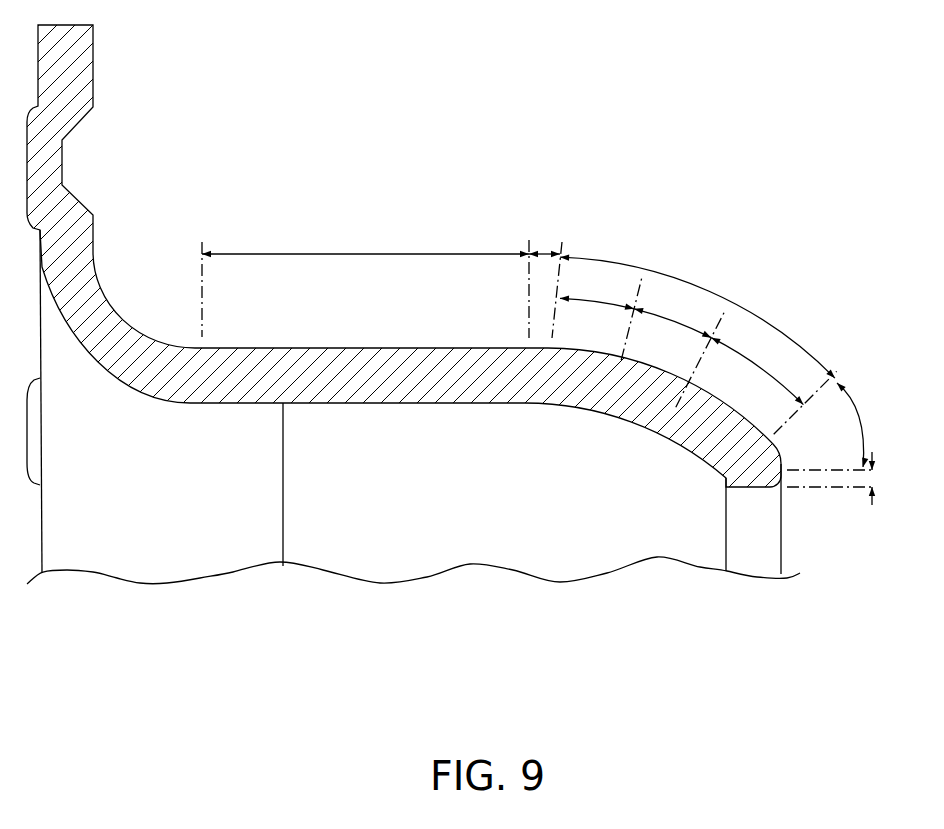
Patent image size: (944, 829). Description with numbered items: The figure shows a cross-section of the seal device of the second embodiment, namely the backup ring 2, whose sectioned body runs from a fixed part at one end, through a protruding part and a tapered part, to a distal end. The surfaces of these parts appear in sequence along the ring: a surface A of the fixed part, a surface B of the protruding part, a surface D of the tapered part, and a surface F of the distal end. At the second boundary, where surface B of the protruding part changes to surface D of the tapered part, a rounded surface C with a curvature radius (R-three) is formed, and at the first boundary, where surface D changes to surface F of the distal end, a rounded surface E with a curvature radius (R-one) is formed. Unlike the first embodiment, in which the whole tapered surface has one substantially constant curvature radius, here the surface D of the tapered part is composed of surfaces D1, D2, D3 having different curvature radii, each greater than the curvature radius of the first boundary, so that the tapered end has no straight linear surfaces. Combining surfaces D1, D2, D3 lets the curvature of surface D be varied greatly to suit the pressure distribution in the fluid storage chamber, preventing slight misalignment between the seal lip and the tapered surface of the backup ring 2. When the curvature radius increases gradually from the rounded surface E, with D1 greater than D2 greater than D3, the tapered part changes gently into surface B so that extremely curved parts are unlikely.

The backup ring 2 is at (418, 127).
The surface of the fixed part A is at (123, 230).
The surface of the protruding part B is at (365, 282).
The rounded surface of the second boundary C is at (545, 281).
The surface of the tapered part D is at (697, 316).
The first curved surface of the tapered part D1 is at (601, 315).
The second curved surface of the tapered part D2 is at (680, 352).
The third curved surface of the tapered part D3 is at (773, 386).
The rounded surface of the first boundary E is at (859, 425).
The surface of the distal end F is at (842, 478).